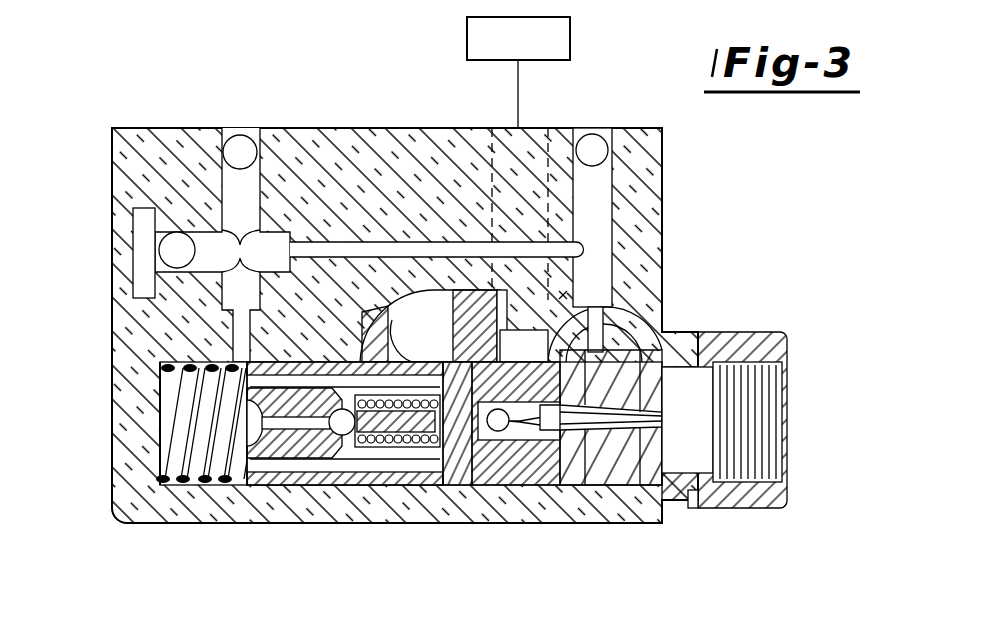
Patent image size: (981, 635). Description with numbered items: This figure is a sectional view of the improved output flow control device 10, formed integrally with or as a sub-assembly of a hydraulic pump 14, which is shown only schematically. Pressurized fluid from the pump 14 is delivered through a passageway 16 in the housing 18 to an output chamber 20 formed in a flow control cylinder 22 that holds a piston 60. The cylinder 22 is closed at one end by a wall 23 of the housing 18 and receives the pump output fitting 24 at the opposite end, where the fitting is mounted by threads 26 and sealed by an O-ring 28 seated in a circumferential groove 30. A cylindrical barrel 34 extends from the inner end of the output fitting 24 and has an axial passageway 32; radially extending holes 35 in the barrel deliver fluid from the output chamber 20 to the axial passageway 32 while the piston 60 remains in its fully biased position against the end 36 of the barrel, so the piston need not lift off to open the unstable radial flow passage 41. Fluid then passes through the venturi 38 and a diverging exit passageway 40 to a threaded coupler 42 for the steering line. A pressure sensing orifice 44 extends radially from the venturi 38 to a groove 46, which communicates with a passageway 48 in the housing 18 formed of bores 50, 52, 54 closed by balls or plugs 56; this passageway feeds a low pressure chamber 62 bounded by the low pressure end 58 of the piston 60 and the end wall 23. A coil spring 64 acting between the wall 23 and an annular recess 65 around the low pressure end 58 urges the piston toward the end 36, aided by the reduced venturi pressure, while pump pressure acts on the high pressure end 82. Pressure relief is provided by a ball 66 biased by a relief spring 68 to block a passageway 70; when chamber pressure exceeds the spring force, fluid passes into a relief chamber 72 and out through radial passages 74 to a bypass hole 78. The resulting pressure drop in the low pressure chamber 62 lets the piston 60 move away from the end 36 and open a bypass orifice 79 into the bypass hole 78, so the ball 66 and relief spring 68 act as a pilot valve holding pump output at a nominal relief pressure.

The output flow control device 10 is at (387, 122).
The pump 14 is at (518, 72).
The passageway 16 is at (535, 155).
The housing 18 is at (668, 155).
The output chamber 20 is at (524, 346).
The flow control cylinder 22 is at (162, 505).
The wall 23 is at (165, 372).
The output fitting 24 is at (765, 334).
The threads 26 is at (572, 490).
The O-ring 28 is at (645, 490).
The circumferential groove 30 is at (642, 335).
The axial passageway 32 is at (532, 490).
The cylindrical barrel 34 is at (584, 315).
The radially extending holes 35 is at (629, 412).
The end of the barrel 36 is at (500, 490).
The venturi 38 is at (612, 490).
The diverging exit passageway 40 is at (688, 500).
The radial flow passage 41 is at (500, 355).
The threaded coupler 42 is at (740, 410).
The pressure sensing orifice 44 is at (660, 348).
The groove 46 is at (618, 308).
The passageway 48 is at (140, 298).
The bore 50 is at (612, 198).
The bore 52 is at (325, 240).
The bore 54 is at (230, 305).
The balls or plugs 56 is at (240, 136).
The low pressure end 58 is at (250, 490).
The piston 60 is at (350, 490).
The low pressure chamber 62 is at (212, 492).
The coil spring 64 is at (165, 472).
The annular recess 65 is at (298, 490).
The ball 66 is at (400, 490).
The relief spring 68 is at (455, 490).
The passageway 70 is at (335, 492).
The relief chamber 72 is at (372, 490).
The radial passages 74 is at (378, 358).
The bypass hole 78 is at (433, 290).
The bypass orifice 79 is at (450, 355).
The high pressure end 82 is at (480, 490).